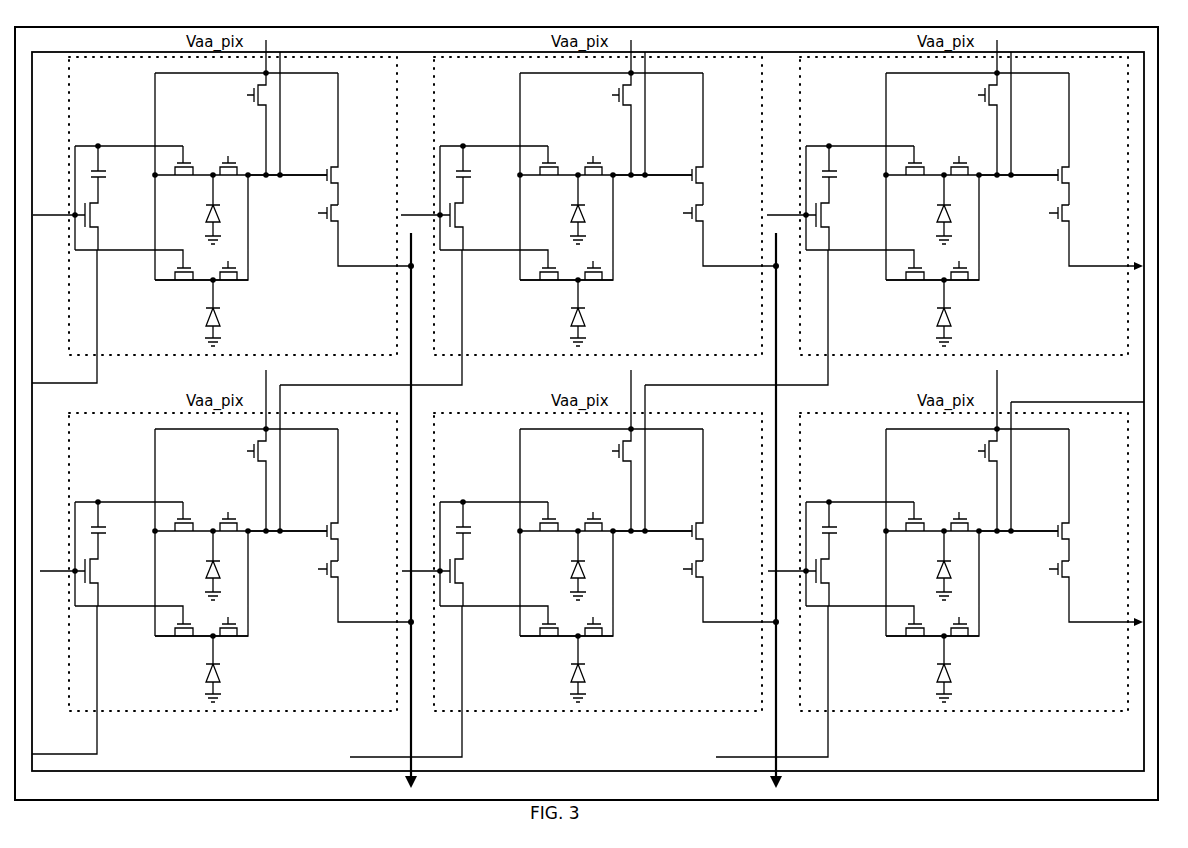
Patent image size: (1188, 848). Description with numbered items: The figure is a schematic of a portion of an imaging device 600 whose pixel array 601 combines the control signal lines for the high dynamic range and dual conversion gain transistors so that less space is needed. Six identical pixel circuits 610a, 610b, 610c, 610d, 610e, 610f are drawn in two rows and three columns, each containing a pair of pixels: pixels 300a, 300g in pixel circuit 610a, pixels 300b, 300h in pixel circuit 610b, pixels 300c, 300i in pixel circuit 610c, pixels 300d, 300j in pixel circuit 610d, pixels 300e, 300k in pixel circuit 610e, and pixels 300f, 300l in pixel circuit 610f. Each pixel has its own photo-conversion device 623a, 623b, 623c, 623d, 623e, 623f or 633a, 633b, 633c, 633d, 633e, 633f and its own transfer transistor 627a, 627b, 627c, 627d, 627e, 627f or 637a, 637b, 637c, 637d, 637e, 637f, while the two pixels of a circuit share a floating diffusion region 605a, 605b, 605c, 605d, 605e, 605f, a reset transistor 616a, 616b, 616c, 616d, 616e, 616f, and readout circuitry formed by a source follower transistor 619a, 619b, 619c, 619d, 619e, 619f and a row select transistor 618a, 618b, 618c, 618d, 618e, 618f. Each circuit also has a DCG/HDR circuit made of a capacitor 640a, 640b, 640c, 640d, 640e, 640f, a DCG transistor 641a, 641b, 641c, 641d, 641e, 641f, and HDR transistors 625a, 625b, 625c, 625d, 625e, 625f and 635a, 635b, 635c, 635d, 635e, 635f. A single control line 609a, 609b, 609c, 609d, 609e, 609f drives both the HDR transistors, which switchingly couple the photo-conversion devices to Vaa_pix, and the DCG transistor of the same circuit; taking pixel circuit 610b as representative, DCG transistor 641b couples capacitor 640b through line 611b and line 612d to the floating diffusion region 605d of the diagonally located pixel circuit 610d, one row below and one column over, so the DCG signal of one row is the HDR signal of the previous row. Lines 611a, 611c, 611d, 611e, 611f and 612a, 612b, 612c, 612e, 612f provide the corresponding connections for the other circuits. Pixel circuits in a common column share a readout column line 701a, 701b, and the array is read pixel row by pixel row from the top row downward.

The imaging device 600 is at (1156, 797).
The pixel array 601 is at (1136, 767).
The readout column line 701a is at (411, 740).
The readout column line 701b is at (776, 740).
The pixel circuit 610a is at (141, 87).
The pixel circuit 610b is at (598, 206).
The pixel circuit 610c is at (964, 206).
The pixel circuit 610d is at (233, 562).
The pixel circuit 610e is at (598, 562).
The pixel circuit 610f is at (964, 562).
The pixel 300a is at (146, 132).
The pixel 300b is at (586, 176).
The pixel 300c is at (952, 176).
The pixel 300d is at (221, 532).
The pixel 300e is at (586, 532).
The pixel 300f is at (952, 532).
The pixel 300g is at (142, 306).
The pixel 300h is at (541, 314).
The pixel 300i is at (907, 314).
The pixel 300j is at (176, 670).
The pixel 300k is at (541, 670).
The pixel 300l is at (907, 670).
The control line 609a is at (50, 204).
The control line 609b is at (473, 192).
The control line 609c is at (839, 192).
The control line 609d is at (108, 547).
The control line 609e is at (452, 547).
The control line 609f is at (818, 547).
The capacitor 640a is at (119, 172).
The capacitor 640b is at (481, 171).
The capacitor 640c is at (847, 171).
The capacitor 640d is at (116, 527).
The capacitor 640e is at (481, 527).
The capacitor 640f is at (846, 527).
The DCG transistor 641a is at (118, 216).
The DCG transistor 641b is at (473, 221).
The DCG transistor 641c is at (839, 221).
The DCG transistor 641d is at (108, 577).
The DCG transistor 641e is at (473, 577).
The DCG transistor 641f is at (838, 577).
The reset transistor 616a is at (249, 100).
The reset transistor 616b is at (596, 109).
The reset transistor 616c is at (962, 109).
The reset transistor 616d is at (231, 452).
The reset transistor 616e is at (596, 452).
The reset transistor 616f is at (962, 452).
The transfer transistor 627a is at (215, 164).
The transfer transistor 627b is at (581, 149).
The transfer transistor 627c is at (947, 149).
The transfer transistor 627d is at (216, 505).
The transfer transistor 627e is at (581, 505).
The transfer transistor 627f is at (947, 505).
The HDR transistor 625a is at (189, 183).
The HDR transistor 625b is at (546, 177).
The HDR transistor 625c is at (911, 177).
The HDR transistor 625d is at (181, 533).
The HDR transistor 625e is at (546, 533).
The HDR transistor 625f is at (910, 533).
The photo-conversion device 623a is at (207, 210).
The photo-conversion device 623b is at (555, 208).
The photo-conversion device 623c is at (921, 208).
The photo-conversion device 623d is at (190, 564).
The photo-conversion device 623e is at (555, 564).
The photo-conversion device 623f is at (921, 564).
The line 612a is at (281, 80).
The line 612b is at (670, 115).
The line 612c is at (1035, 115).
The line 612d is at (304, 459).
The line 612e is at (669, 459).
The line 612f is at (1076, 468).
The floating diffusion region 605a is at (280, 181).
The floating diffusion region 605b is at (651, 201).
The floating diffusion region 605c is at (1017, 201).
The floating diffusion region 605d is at (286, 557).
The floating diffusion region 605e is at (651, 557).
The floating diffusion region 605f is at (1017, 557).
The source follower transistor 619a is at (339, 177).
The source follower transistor 619b is at (721, 139).
The source follower transistor 619c is at (1087, 139).
The source follower transistor 619d is at (356, 495).
The source follower transistor 619e is at (721, 495).
The source follower transistor 619f is at (1086, 495).
The row select transistor 618a is at (339, 215).
The row select transistor 618b is at (729, 235).
The row select transistor 618c is at (1096, 237).
The row select transistor 618d is at (364, 591).
The row select transistor 618e is at (729, 591).
The row select transistor 618f is at (1096, 593).
The HDR transistor 635a is at (183, 284).
The HDR transistor 635b is at (526, 244).
The HDR transistor 635c is at (892, 244).
The HDR transistor 635d is at (161, 600).
The HDR transistor 635e is at (526, 600).
The HDR transistor 635f is at (892, 600).
The transfer transistor 637a is at (229, 284).
The transfer transistor 637b is at (602, 287).
The transfer transistor 637c is at (967, 287).
The transfer transistor 637d is at (237, 643).
The transfer transistor 637e is at (602, 643).
The transfer transistor 637f is at (966, 643).
The photo-conversion device 633a is at (205, 321).
The photo-conversion device 633b is at (554, 311).
The photo-conversion device 633c is at (920, 311).
The photo-conversion device 633d is at (189, 667).
The photo-conversion device 633e is at (554, 667).
The photo-conversion device 633f is at (920, 667).
The line 611a is at (97, 301).
The line 611b is at (463, 291).
The line 611c is at (829, 291).
The line 611d is at (97, 739).
The line 611e is at (463, 735).
The line 611f is at (829, 735).